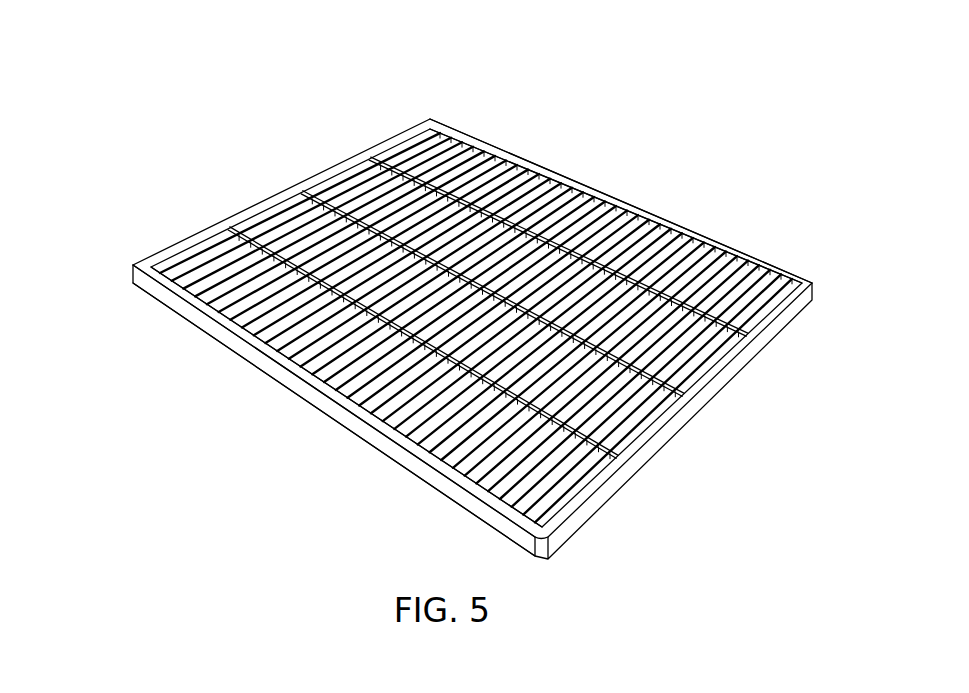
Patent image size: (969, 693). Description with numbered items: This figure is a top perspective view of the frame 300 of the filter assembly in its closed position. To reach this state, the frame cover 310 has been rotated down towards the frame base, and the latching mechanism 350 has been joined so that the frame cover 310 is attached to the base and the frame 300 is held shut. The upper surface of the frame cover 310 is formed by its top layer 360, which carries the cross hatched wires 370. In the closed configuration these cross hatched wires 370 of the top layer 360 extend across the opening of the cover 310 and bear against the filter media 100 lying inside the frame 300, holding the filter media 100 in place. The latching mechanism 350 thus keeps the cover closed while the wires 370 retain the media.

The filter media 100 is at (290, 226).
The frame 300 is at (188, 318).
The frame cover 310 is at (615, 192).
The latching mechanism 350 is at (307, 412).
The top layer 360 is at (497, 141).
The cross hatched wires 370 is at (708, 307).